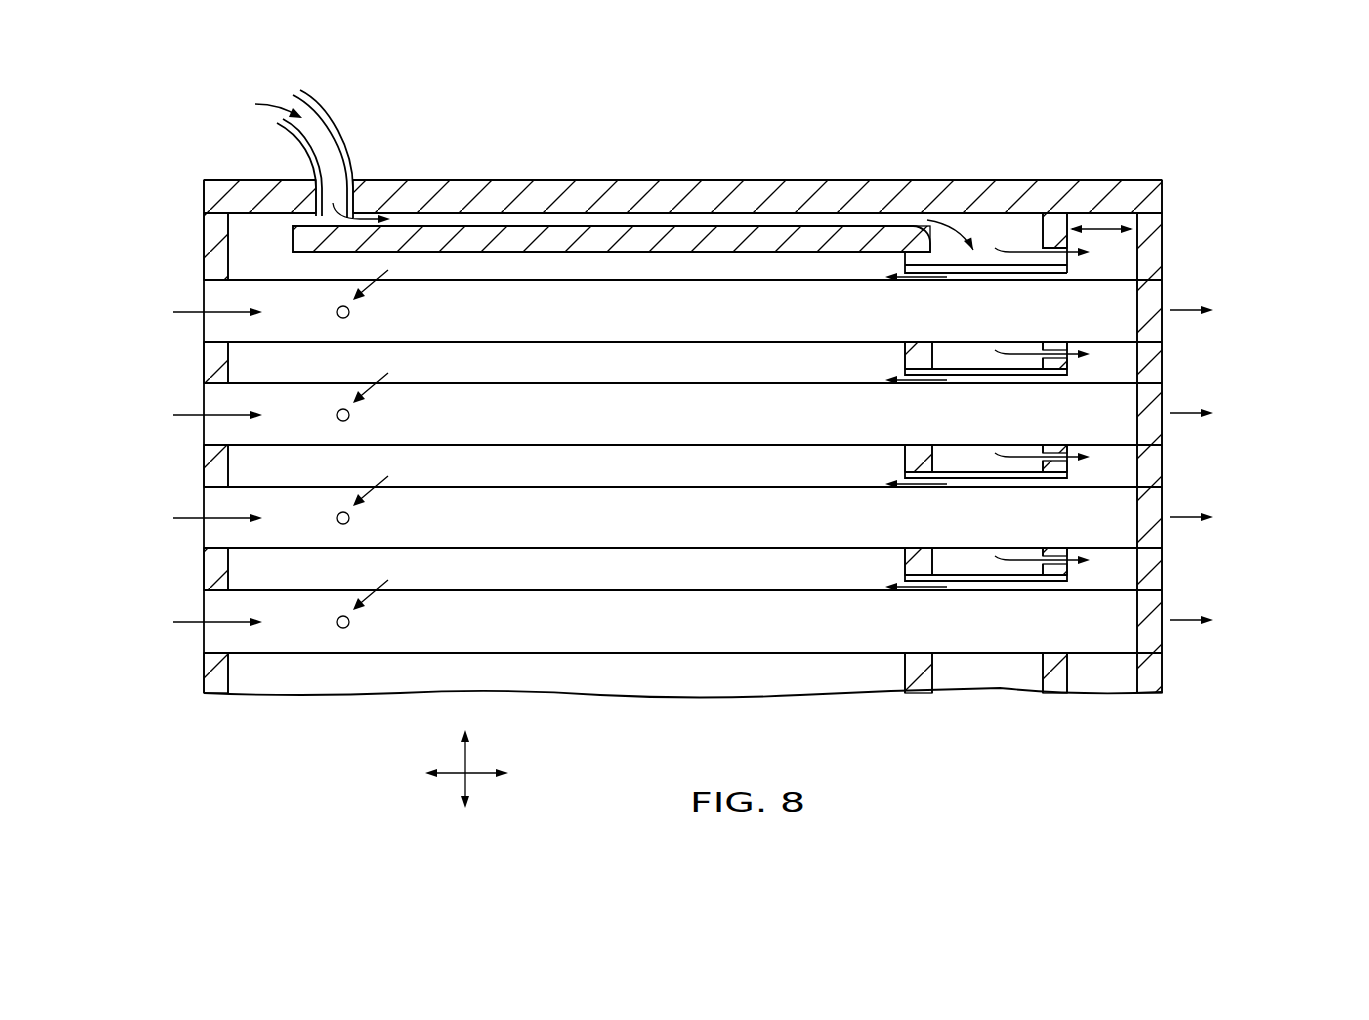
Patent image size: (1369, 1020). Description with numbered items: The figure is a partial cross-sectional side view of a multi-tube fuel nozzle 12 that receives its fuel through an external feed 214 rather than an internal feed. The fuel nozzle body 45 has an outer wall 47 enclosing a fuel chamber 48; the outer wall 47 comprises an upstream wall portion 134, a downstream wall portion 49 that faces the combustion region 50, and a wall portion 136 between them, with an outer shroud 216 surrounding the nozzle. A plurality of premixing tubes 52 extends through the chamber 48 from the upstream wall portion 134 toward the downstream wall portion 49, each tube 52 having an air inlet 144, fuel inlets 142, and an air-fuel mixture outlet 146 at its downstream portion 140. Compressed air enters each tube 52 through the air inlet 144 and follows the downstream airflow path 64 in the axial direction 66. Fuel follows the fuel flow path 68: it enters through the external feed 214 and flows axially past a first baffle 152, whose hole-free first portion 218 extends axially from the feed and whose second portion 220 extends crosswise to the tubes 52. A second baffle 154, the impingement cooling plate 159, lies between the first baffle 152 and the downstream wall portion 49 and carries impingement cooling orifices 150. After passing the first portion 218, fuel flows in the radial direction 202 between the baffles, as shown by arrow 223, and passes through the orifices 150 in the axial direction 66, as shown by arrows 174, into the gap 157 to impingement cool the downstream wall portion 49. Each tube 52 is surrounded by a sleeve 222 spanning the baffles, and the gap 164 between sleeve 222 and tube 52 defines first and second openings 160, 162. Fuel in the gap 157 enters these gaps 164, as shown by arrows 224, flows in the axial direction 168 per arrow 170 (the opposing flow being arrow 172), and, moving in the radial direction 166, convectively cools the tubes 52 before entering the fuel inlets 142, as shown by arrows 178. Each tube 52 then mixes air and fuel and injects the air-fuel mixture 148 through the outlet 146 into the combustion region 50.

The fuel nozzle 12 is at (1270, 186).
The fuel nozzle body 45 is at (724, 180).
The outer wall 47 is at (783, 180).
The chamber 48 is at (962, 220).
The downstream wall portion 49 is at (1155, 268).
The combustion region 50 is at (1270, 491).
The tubes 52 is at (505, 342).
The downstream airflow path 64 is at (204, 320).
The axial direction 66 is at (468, 768).
The fuel flow path 68 is at (372, 208).
The upstream wall portion 134 is at (204, 246).
The wall portion 136 is at (900, 182).
The downstream portion 140 is at (1147, 330).
The fuel inlet 142 is at (349, 316).
The air inlet 144 is at (204, 340).
The air-fuel mixture outlet 146 is at (1152, 298).
The air-fuel mixture 148 is at (1190, 311).
The impingement cooling orifices 150 is at (997, 398).
The first baffle 152 is at (862, 232).
The second baffle 154 is at (1097, 212).
The gap 157 is at (1163, 203).
The impingement cooling plate 159 is at (1067, 660).
The first opening 160 is at (887, 279).
The second opening 162 is at (1047, 282).
The gap 164 is at (916, 432).
The radial direction 166 is at (462, 757).
The axial direction 168 is at (462, 777).
The arrow 170 is at (922, 282).
The arrow 172 is at (1045, 214).
The arrows 174 is at (1085, 348).
The arrows 178 is at (384, 272).
The radial direction 202 is at (470, 790).
The external feed 214 is at (318, 122).
The outer shroud 216 is at (800, 180).
The first portion 218 is at (522, 226).
The second portion 220 is at (905, 663).
The sleeve 222 is at (960, 274).
The arrow 223 is at (950, 220).
The arrows 224 is at (1072, 377).